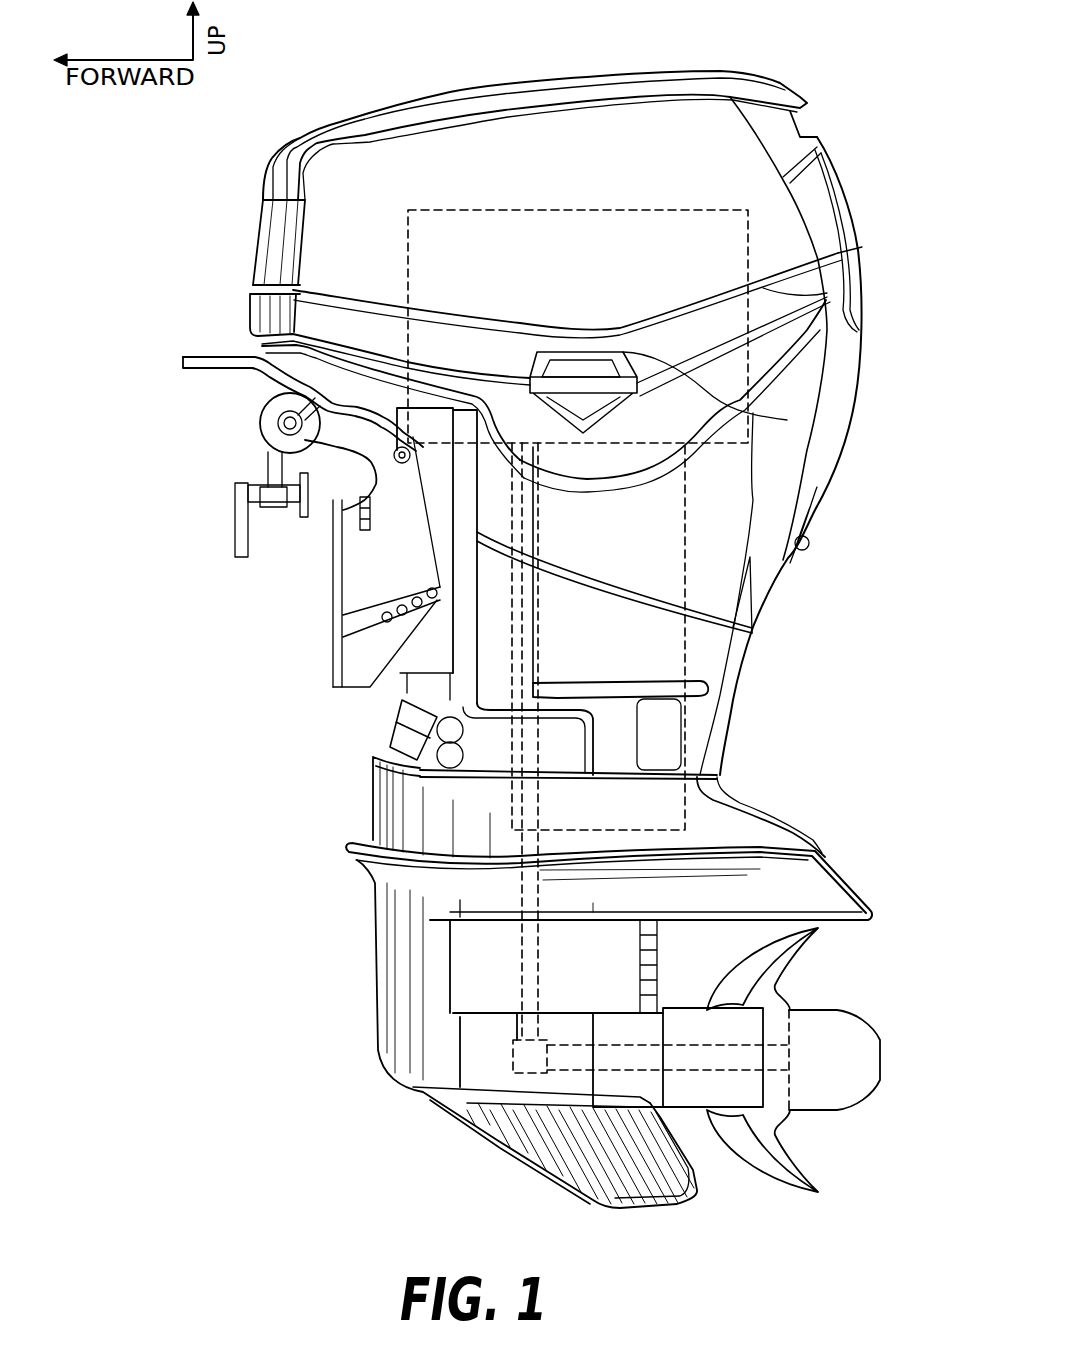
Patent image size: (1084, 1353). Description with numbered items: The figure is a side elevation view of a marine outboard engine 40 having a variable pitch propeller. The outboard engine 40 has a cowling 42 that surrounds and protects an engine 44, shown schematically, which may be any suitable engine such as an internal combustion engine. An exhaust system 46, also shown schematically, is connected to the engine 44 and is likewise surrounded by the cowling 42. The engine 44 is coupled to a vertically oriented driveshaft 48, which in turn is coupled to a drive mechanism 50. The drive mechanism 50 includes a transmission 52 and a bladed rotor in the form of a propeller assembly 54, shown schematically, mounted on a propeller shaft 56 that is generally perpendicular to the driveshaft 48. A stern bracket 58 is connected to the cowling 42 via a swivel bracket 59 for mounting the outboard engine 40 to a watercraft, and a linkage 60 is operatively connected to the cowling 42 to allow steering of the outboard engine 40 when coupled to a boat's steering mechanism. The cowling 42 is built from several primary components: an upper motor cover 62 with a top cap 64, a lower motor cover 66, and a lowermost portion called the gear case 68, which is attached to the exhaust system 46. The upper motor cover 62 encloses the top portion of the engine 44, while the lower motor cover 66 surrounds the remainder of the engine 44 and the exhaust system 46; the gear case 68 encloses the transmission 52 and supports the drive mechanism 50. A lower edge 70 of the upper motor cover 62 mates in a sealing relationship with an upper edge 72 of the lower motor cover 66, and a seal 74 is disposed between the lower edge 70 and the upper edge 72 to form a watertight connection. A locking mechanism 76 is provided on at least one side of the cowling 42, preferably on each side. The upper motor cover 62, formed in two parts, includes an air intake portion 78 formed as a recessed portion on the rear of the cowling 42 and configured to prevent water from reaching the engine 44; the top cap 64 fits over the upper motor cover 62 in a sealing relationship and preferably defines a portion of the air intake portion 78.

The marine outboard engine 40 is at (779, 37).
The cowling 42 is at (861, 150).
The engine 44 is at (468, 226).
The exhaust system 46 is at (668, 807).
The driveshaft 48 is at (523, 967).
The drive mechanism 50 is at (507, 1064).
The transmission 52 is at (528, 1062).
The propeller assembly 54 is at (883, 1067).
The propeller shaft 56 is at (683, 1050).
The stern bracket 58 is at (365, 573).
The swivel bracket 59 is at (425, 660).
The linkage 60 is at (205, 369).
The upper motor cover 62 is at (322, 243).
The top cap 64 is at (517, 100).
The lower motor cover 66 is at (787, 507).
The gear case 68 is at (397, 913).
The lower edge of the upper motor cover 70 is at (787, 268).
The upper edge of the lower motor cover 72 is at (767, 293).
The seal 74 is at (835, 247).
The locking mechanism 76 is at (787, 420).
The air intake portion 78 is at (790, 124).